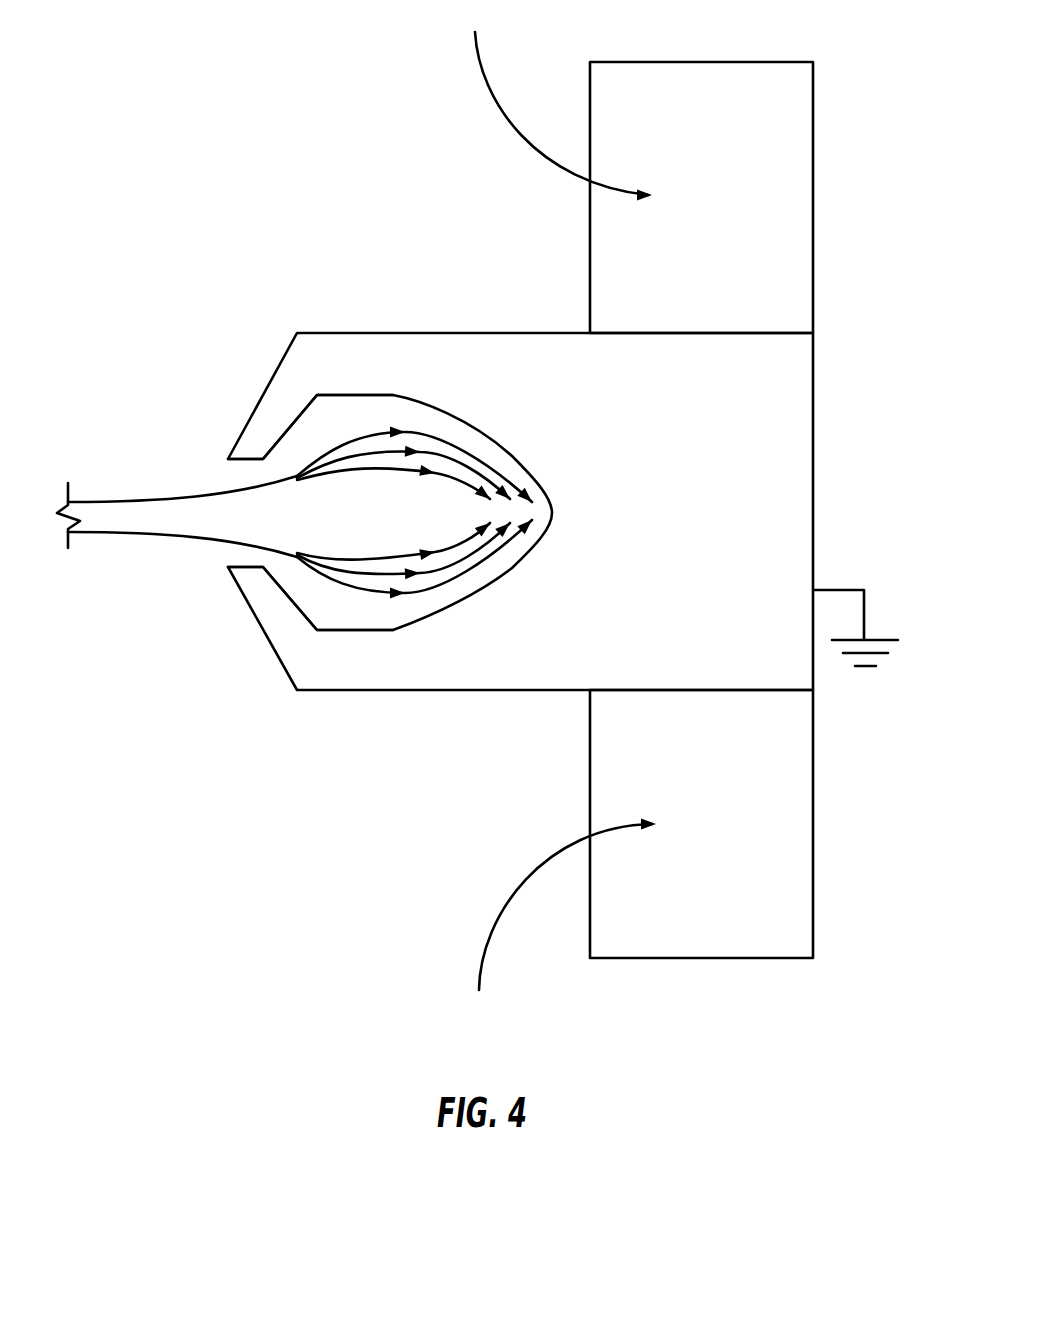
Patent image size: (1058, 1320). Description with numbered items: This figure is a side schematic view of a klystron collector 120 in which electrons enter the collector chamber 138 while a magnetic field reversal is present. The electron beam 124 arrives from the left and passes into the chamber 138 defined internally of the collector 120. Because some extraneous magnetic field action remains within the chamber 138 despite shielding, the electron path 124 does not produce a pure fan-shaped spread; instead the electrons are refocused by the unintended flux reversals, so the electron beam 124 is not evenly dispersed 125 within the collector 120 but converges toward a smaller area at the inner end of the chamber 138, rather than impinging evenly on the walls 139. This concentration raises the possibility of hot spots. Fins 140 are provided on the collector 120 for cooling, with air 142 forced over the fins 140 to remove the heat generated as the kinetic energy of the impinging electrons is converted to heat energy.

The collector 120 is at (395, 333).
The electron beam 124 is at (183, 498).
The electron dispersion 125 is at (408, 431).
The collector chamber 138 is at (263, 423).
The walls 139 is at (288, 603).
The fins 140 is at (814, 195).
The air 142 is at (498, 117).